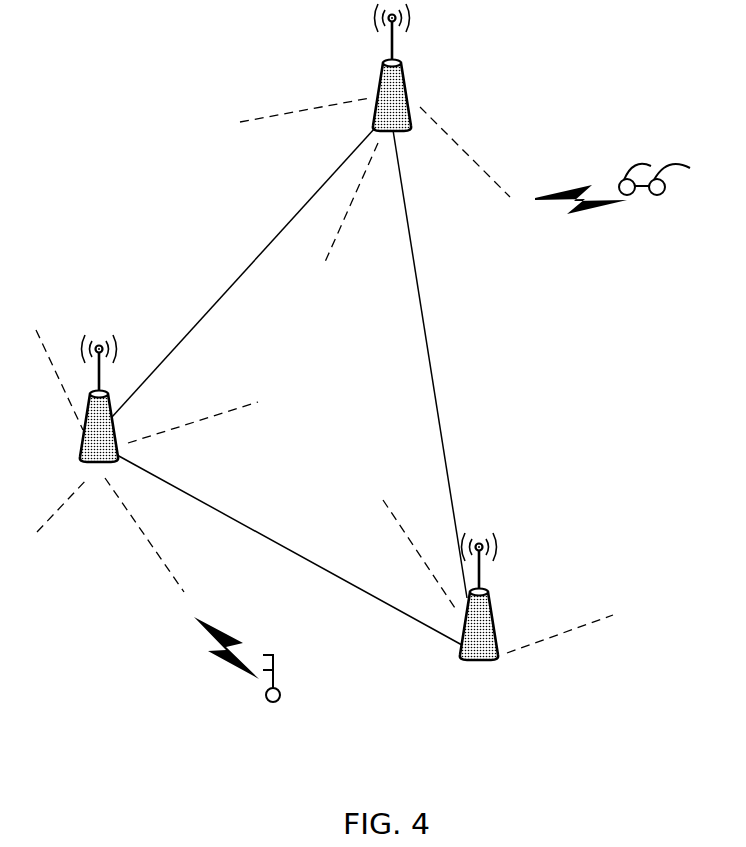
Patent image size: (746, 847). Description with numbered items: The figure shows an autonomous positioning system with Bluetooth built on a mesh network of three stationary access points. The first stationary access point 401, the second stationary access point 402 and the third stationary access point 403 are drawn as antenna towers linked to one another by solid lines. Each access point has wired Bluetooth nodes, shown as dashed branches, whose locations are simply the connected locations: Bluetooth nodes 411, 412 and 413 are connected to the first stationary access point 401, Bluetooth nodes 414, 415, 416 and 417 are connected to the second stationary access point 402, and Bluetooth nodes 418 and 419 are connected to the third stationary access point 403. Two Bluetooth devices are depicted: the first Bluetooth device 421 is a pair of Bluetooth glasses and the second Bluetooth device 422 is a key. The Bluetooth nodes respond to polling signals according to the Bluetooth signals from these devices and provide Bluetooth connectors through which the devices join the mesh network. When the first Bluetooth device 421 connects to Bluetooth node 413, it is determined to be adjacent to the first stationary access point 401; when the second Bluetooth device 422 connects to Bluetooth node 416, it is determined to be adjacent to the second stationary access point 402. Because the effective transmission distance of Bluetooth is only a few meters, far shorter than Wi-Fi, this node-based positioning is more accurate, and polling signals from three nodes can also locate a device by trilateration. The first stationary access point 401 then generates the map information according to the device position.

The first stationary access point 401 is at (414, 67).
The second stationary access point 402 is at (78, 403).
The third stationary access point 403 is at (479, 612).
The Bluetooth node 411 is at (287, 114).
The Bluetooth node 412 is at (340, 218).
The Bluetooth node 413 is at (523, 166).
The Bluetooth node 414 is at (46, 367).
The Bluetooth node 415 is at (49, 518).
The Bluetooth node 416 is at (182, 578).
The Bluetooth node 417 is at (212, 410).
The Bluetooth node 418 is at (404, 539).
The Bluetooth node 419 is at (576, 626).
The first Bluetooth device 421 is at (654, 196).
The second Bluetooth device 422 is at (273, 695).